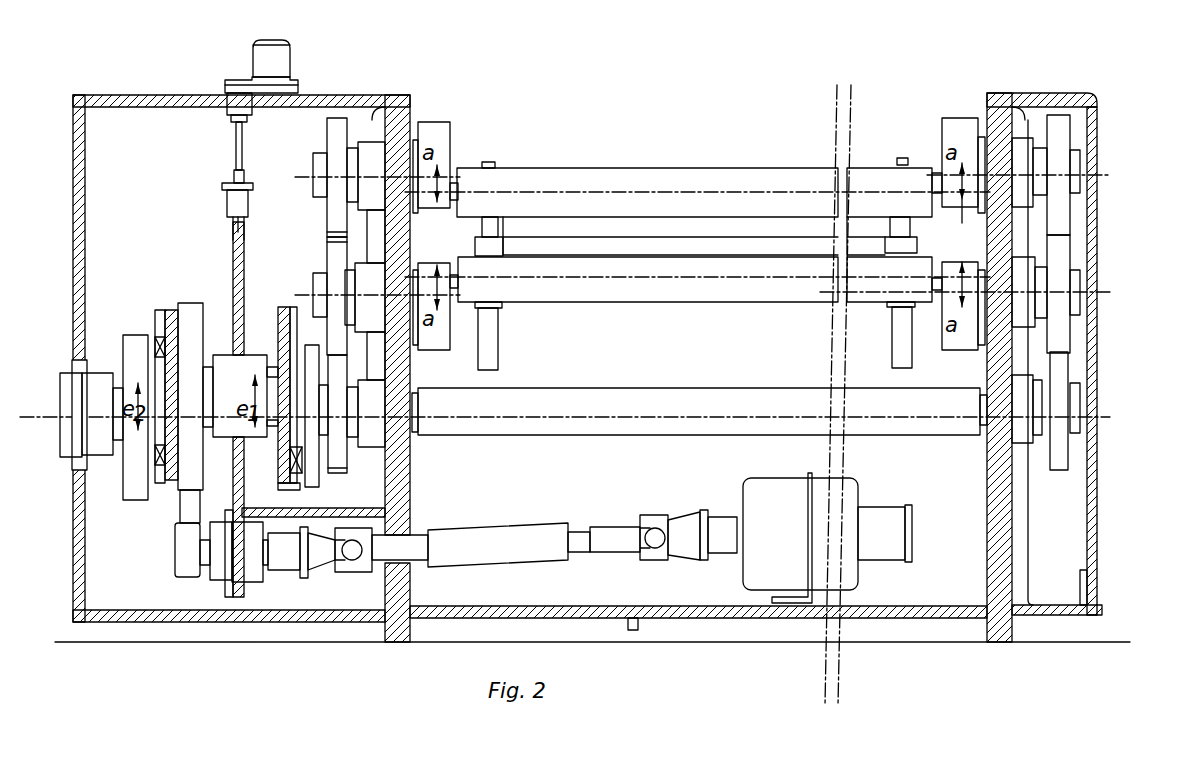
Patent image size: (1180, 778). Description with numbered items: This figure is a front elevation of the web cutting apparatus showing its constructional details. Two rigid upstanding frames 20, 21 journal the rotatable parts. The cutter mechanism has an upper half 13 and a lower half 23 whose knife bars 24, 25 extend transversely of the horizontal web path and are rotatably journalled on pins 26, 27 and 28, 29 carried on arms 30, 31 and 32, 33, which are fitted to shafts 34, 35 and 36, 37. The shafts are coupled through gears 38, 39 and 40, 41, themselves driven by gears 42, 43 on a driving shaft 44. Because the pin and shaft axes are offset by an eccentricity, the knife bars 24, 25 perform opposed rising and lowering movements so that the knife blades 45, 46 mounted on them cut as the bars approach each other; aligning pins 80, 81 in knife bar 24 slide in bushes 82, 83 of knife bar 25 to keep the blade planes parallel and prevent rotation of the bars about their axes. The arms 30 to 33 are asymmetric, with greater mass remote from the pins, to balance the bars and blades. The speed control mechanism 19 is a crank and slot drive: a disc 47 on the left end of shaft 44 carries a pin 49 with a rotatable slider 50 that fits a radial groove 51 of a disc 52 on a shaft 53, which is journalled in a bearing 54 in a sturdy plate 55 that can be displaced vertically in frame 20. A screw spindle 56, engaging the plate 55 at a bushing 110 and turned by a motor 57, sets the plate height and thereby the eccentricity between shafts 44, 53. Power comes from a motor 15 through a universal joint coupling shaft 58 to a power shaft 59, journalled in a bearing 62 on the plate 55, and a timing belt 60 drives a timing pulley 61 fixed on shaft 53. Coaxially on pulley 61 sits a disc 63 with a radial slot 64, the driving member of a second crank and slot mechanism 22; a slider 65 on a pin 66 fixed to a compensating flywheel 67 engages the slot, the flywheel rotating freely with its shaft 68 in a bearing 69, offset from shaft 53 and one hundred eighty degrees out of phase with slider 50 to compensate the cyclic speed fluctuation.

The upper half of the cutter mechanism 13 is at (609, 160).
The motor 15 is at (848, 490).
The speed control mechanism 19 is at (303, 327).
The frame 20 is at (389, 106).
The frame 21 is at (997, 110).
The second crank and slot drive mechanism 22 is at (144, 279).
The lower half of the cutter mechanism 23 is at (587, 303).
The knife bar 24 is at (668, 178).
The knife bar 25 is at (696, 290).
The pin 26 is at (458, 188).
The pin 27 is at (932, 180).
The pin 28 is at (452, 286).
The pin 29 is at (938, 293).
The arm 30 is at (436, 133).
The arm 31 is at (952, 132).
The arm 32 is at (437, 347).
The arm 33 is at (957, 340).
The shaft 34 is at (348, 157).
The shaft 35 is at (1042, 167).
The shaft 36 is at (350, 282).
The shaft 37 is at (1055, 300).
The gear 38 is at (336, 135).
The gear 39 is at (1063, 135).
The gear 40 is at (336, 253).
The gear 41 is at (1060, 253).
The gear 42 is at (337, 452).
The gear 43 is at (1053, 457).
The driving shaft 44 is at (515, 432).
The knife blade 45 is at (717, 228).
The knife blade 46 is at (760, 248).
The disc 47 is at (313, 486).
The pin 49 is at (294, 478).
The slider 50 is at (290, 467).
The radial groove 51 is at (282, 311).
The disc 52 is at (280, 323).
The shaft 53 is at (208, 370).
The bearing 54 is at (222, 440).
The plate 55 is at (236, 243).
The screw spindle 56 is at (236, 130).
The motor 57 is at (252, 58).
The universal joint coupling shaft 58 is at (498, 538).
The power shaft 59 is at (175, 566).
The timing belt 60 is at (185, 507).
The timing pulley 61 is at (195, 308).
The bearing 62 is at (253, 568).
The disc 63 is at (173, 310).
The radial slot 64 is at (162, 315).
The slider 65 is at (158, 338).
The pin 66 is at (148, 350).
The compensating flywheel 67 is at (135, 485).
The flywheel shaft 68 is at (117, 398).
The bearing 69 is at (67, 445).
The aligning pin 80 is at (482, 226).
The aligning pin 81 is at (910, 224).
The bush 82 is at (475, 247).
The bush 83 is at (917, 246).
The bushing 110 is at (221, 203).